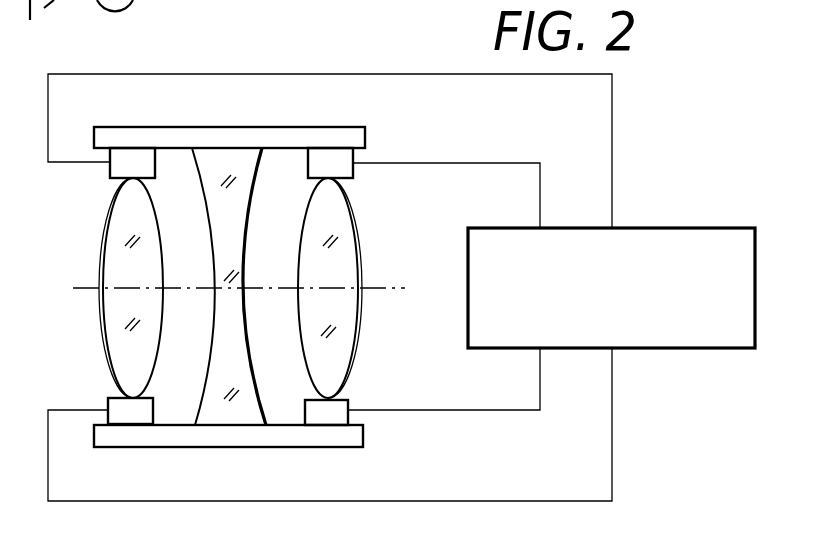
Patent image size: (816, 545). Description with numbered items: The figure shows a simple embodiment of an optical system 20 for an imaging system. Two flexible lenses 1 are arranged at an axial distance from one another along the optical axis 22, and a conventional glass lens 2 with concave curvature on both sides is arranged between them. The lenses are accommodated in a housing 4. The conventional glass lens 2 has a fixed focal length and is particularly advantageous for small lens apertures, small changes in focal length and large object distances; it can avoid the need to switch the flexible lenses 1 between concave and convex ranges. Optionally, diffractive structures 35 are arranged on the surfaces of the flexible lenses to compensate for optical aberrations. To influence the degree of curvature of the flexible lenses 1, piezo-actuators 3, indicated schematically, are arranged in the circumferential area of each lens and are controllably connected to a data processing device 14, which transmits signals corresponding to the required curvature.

The flexible lens 1 is at (110, 325).
The conventional glass lens 2 is at (242, 357).
The piezo-actuator 3 is at (342, 168).
The housing 4 is at (362, 136).
The data processing device 14 is at (712, 238).
The optical system 20 is at (248, 110).
The optical axis 22 is at (92, 288).
The diffractive structures 35 is at (104, 226).